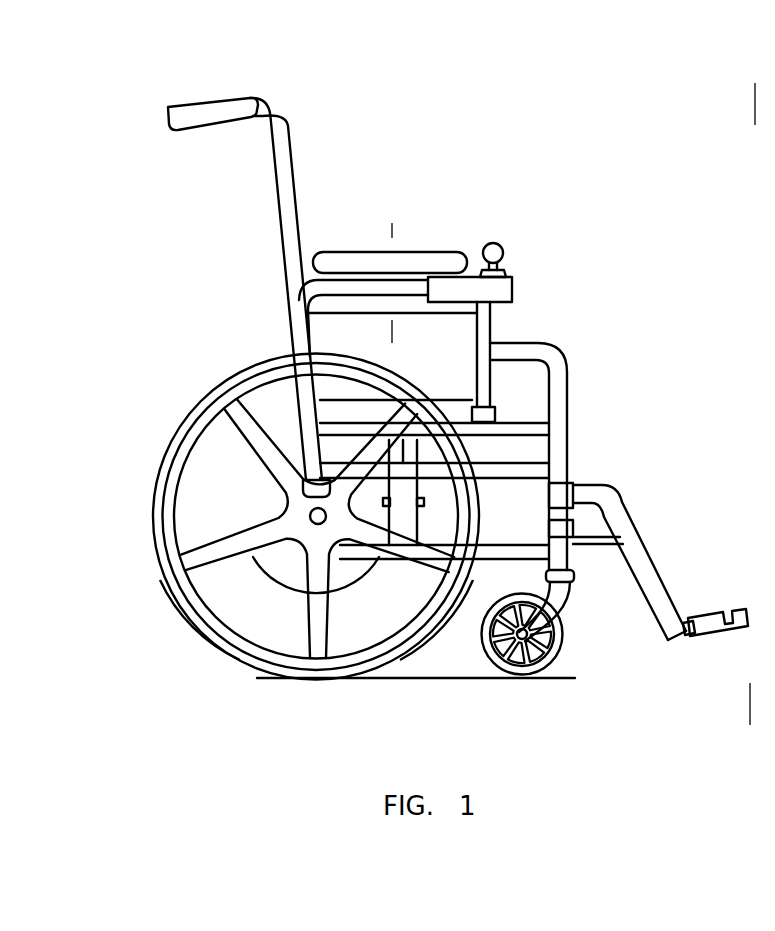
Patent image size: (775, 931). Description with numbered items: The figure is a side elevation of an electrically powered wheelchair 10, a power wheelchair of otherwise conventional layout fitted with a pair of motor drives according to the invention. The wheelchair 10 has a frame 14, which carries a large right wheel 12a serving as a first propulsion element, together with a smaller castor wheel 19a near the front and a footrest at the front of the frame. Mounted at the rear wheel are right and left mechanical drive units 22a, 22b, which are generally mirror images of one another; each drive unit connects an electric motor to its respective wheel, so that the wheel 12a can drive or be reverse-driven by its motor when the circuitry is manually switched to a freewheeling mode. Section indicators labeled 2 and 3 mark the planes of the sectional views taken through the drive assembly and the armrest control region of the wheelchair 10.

The electrically powered wheelchair 10 is at (500, 97).
The frame 14 is at (290, 312).
The right wheel 12a is at (234, 654).
The right mechanical drive unit 22a is at (198, 652).
The left mechanical drive unit 22b is at (433, 658).
The castor wheel 19a is at (565, 632).
The section line 2- 2 is at (755, 83).
The section line 3- 3 is at (392, 223).